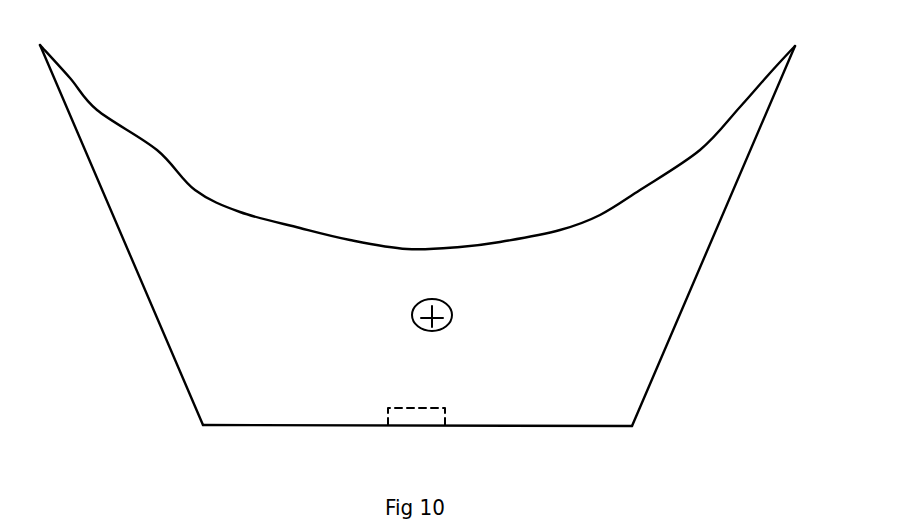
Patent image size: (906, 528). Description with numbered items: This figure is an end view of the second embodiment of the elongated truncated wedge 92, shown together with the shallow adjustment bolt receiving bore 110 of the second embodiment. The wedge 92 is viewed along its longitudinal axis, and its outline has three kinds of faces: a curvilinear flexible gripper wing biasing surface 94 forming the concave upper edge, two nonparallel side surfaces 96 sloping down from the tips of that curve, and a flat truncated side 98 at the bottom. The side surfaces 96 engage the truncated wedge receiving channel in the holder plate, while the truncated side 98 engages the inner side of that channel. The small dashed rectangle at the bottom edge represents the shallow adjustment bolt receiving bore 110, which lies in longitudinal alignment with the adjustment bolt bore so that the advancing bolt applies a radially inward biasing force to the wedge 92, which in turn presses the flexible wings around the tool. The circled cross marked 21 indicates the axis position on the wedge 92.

The curvilinear flexible gripper wing biasing surface 94 is at (628, 197).
The nonparallel side surfaces 96 is at (150, 300).
The truncated side 98 is at (540, 428).
The elongated truncated wedge 92 is at (606, 321).
The shallow adjustment bolt receiving bore 110 is at (410, 406).
The marker location 21 is at (410, 313).